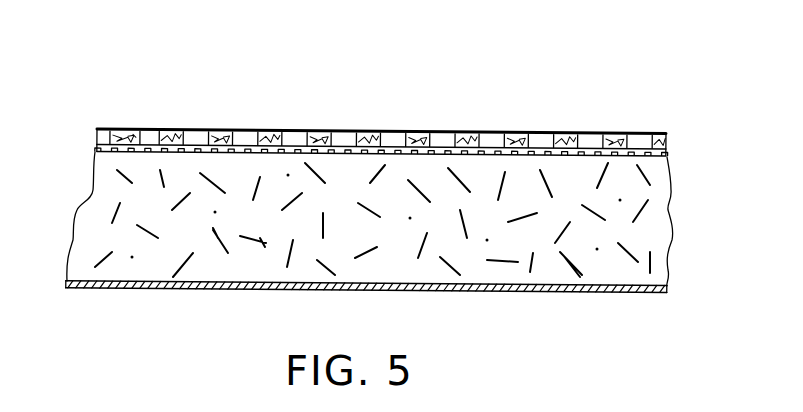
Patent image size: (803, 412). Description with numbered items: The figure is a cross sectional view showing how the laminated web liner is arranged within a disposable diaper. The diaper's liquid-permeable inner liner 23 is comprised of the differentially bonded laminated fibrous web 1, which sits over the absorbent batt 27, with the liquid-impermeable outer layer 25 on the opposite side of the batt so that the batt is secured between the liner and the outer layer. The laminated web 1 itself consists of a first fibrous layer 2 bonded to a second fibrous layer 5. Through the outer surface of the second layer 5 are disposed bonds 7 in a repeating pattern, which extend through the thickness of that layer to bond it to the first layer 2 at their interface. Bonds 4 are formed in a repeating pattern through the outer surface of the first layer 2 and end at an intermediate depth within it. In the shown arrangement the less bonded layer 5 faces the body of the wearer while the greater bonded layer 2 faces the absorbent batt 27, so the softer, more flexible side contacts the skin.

The liquid-permeable inner liner 23 is at (144, 78).
The laminated fibrous web 1 is at (97, 145).
The bonds 7 is at (441, 130).
The second fibrous layer 5 is at (270, 129).
The bonds 4 is at (136, 152).
The first fibrous layer 2 is at (617, 157).
The absorbent batt 27 is at (658, 227).
The liquid-impermeable outer layer 25 is at (538, 294).